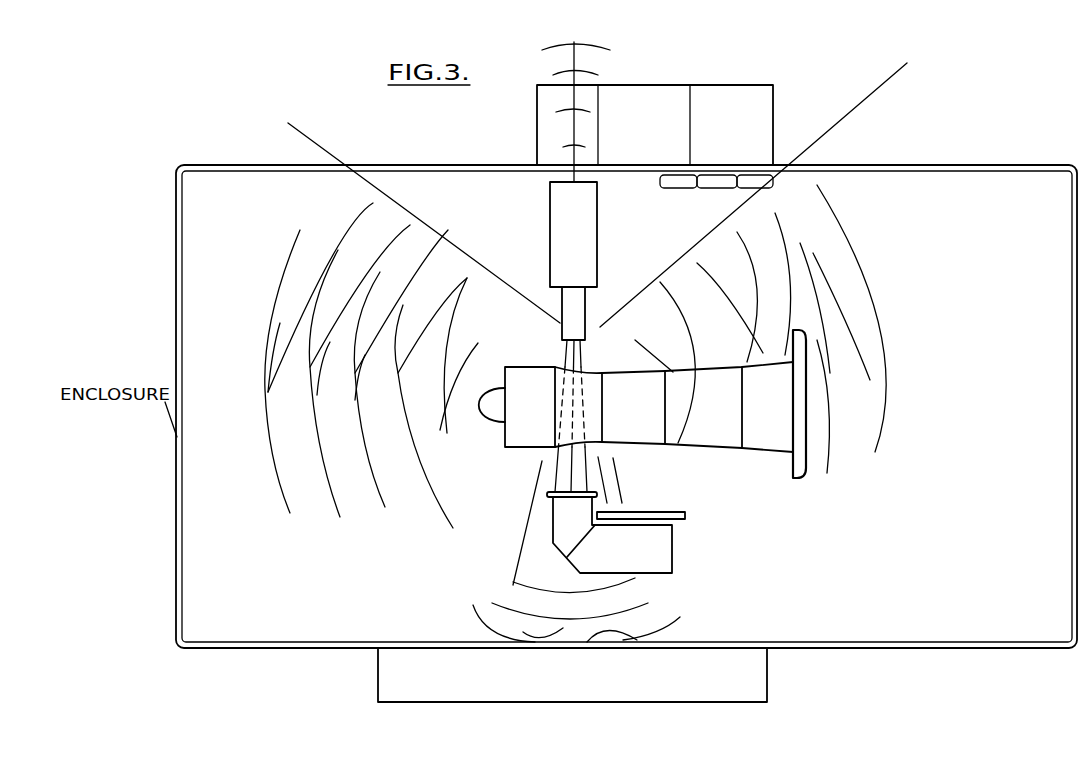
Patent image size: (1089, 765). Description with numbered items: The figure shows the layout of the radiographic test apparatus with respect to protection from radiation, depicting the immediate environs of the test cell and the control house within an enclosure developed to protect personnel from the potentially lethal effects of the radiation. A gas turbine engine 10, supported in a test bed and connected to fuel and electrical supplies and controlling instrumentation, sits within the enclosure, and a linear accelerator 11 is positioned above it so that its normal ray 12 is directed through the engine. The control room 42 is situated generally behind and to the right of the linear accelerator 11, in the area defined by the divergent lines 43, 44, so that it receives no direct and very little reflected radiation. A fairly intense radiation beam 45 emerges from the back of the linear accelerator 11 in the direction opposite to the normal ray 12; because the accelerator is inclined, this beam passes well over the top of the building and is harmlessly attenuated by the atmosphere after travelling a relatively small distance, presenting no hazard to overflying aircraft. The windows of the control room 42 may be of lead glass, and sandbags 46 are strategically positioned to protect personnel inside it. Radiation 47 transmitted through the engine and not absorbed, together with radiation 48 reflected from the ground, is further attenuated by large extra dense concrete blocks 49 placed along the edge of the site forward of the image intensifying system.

The gas turbine engine 10 is at (693, 448).
The linear accelerator 11 is at (555, 246).
The normal ray 12 is at (570, 476).
The control room 42 is at (537, 120).
The divergent line 43 is at (288, 123).
The divergent line 44 is at (878, 90).
The radiation beam 45 is at (574, 59).
The sandbags 46 is at (678, 190).
The transmitted radiation 47 is at (520, 553).
The reflected radiation 48 is at (485, 623).
The concrete blocks 49 is at (378, 686).